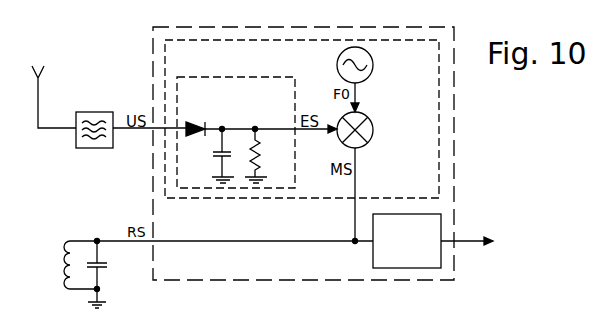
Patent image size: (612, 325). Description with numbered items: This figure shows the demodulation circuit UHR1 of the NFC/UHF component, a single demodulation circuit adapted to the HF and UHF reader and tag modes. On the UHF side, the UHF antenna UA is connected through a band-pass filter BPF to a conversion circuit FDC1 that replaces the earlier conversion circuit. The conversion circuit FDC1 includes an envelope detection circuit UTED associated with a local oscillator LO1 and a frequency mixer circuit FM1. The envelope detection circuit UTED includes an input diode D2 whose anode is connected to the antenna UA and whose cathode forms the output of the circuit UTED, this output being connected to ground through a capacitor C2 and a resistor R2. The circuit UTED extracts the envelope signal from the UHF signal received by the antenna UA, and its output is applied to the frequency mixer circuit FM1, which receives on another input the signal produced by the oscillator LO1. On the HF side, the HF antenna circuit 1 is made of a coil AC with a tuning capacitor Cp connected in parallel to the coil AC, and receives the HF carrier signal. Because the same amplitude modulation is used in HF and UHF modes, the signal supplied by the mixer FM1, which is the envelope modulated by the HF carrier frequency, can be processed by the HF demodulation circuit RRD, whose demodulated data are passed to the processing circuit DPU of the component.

The HF antenna circuit 1 is at (73, 231).
The UHF antenna UA is at (49, 85).
The band-pass filter BPF is at (93, 119).
The input diode D2 is at (196, 119).
The capacitor C2 is at (209, 155).
The resistor R2 is at (266, 155).
The local oscillator LO1 is at (378, 65).
The frequency mixer circuit FM1 is at (380, 130).
The HF demodulation circuit RRD is at (430, 257).
The processing circuit DPU is at (492, 243).
The envelope detection circuit UTED is at (287, 103).
The conversion circuit FDC1 is at (228, 66).
The demodulation circuit UHR1 is at (333, 274).
The coil AC is at (63, 265).
The tuning capacitor Cp is at (111, 274).